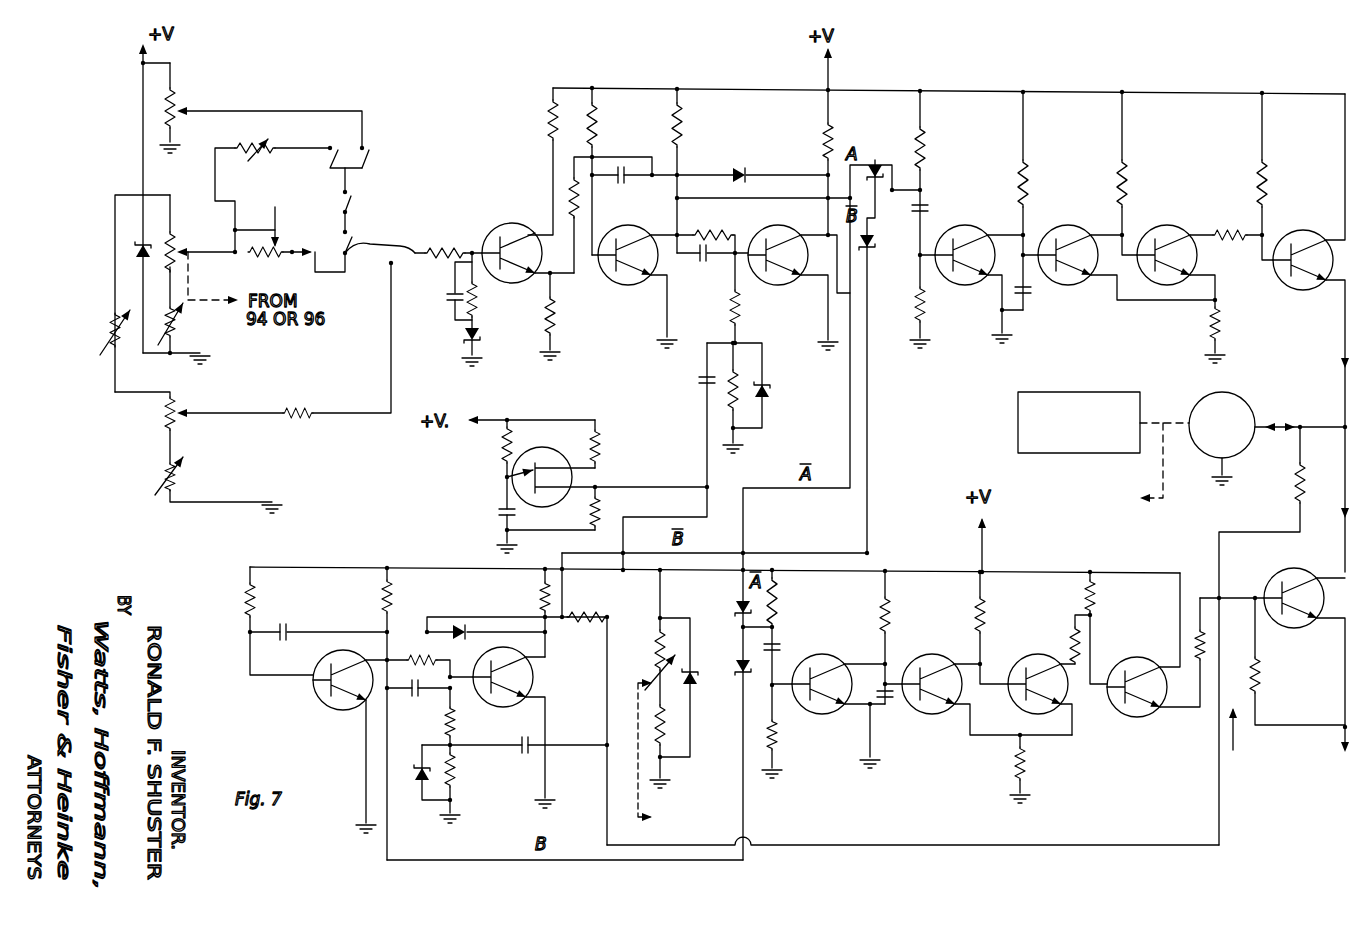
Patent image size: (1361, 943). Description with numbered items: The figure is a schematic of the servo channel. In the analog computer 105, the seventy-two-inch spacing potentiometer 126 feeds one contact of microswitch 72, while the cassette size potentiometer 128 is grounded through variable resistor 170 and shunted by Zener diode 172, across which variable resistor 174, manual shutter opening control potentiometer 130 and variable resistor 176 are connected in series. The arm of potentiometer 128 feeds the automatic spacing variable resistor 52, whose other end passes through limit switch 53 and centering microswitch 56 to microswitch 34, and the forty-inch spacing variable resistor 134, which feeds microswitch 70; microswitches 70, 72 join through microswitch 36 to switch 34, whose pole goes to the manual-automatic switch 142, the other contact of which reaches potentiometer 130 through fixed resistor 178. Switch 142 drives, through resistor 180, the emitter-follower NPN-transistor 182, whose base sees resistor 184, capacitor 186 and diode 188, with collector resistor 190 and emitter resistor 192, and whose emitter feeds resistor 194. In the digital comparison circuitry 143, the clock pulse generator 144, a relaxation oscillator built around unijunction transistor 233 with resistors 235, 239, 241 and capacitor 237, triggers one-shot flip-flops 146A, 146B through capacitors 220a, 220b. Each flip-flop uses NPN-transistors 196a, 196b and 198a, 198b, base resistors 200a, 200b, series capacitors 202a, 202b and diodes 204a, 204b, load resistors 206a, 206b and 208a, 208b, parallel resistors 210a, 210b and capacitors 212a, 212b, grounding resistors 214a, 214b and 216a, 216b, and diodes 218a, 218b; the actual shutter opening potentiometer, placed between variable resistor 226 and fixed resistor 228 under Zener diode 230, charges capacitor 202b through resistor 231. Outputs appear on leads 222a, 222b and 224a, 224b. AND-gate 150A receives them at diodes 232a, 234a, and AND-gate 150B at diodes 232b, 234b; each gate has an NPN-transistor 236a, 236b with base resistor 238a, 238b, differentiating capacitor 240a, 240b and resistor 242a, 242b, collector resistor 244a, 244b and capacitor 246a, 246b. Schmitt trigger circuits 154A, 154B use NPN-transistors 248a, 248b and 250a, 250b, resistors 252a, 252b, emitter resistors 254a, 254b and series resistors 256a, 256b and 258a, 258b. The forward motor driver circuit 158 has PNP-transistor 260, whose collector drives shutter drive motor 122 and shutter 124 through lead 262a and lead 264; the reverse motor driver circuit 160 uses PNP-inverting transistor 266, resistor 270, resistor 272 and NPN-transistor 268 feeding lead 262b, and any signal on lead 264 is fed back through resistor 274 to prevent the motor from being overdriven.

The microswitch 34 is at (366, 242).
The microswitch 36 is at (355, 195).
The automatic spacing variable resistor 52 is at (270, 262).
The limit switch 53 is at (303, 245).
The centering microswitch 56 is at (315, 260).
The microswitch 70 is at (330, 160).
The microswitch 72 is at (372, 157).
The analog computer 105 is at (306, 92).
The shutter drive motor 122 is at (1210, 394).
The shutter 124 is at (1062, 392).
The seventy-two-inch spacing potentiometer 126 is at (180, 100).
The cassette size potentiometer 128 is at (177, 237).
The manual shutter opening control potentiometer 130 is at (160, 415).
The forty-inch spacing variable resistor 134 is at (278, 145).
The manual-automatic switch 142 is at (412, 247).
The digital comparison circuitry 143 is at (878, 82).
The clock pulse generator 144 is at (490, 477).
The one-shot flip-flop 146A is at (704, 163).
The one-shot flip-flop 146B is at (380, 558).
The AND-gate 150A is at (967, 182).
The AND-gate 150B is at (842, 604).
The Schmitt trigger circuit 154A is at (1135, 222).
The Schmitt trigger circuit 154B is at (1002, 642).
The forward motor driver circuit 158 is at (1298, 222).
The reverse motor driver circuit 160 is at (1248, 742).
The variable resistor 170 is at (180, 334).
The Zener diode 172 is at (133, 248).
The variable resistor 174 is at (107, 323).
The variable resistor 176 is at (160, 470).
The fixed resistor 178 is at (292, 398).
The resistor 180 is at (469, 250).
The NPN-transistor 182 is at (506, 230).
The resistor 184 is at (478, 300).
The capacitor 186 is at (450, 302).
The diode 188 is at (462, 337).
The resistor 190 is at (545, 127).
The resistor 192 is at (557, 320).
The resistor 194 is at (570, 196).
The NPN-transistor 196a is at (620, 284).
The NPN-transistor 196b is at (320, 697).
The NPN-transistor 198a is at (785, 287).
The NPN-transistor 198b is at (535, 678).
The resistor 200a is at (595, 120).
The resistor 200b is at (260, 600).
The capacitor 202a is at (622, 181).
The capacitor 202b is at (288, 622).
The diode 204a is at (740, 170).
The diode 204b is at (458, 620).
The load resistor 206a is at (672, 130).
The load resistor 206b is at (390, 597).
The load resistor 208a is at (834, 140).
The load resistor 208b is at (540, 603).
The resistor 210a is at (690, 228).
The resistor 210b is at (430, 657).
The capacitor 212a is at (708, 258).
The capacitor 212b is at (419, 681).
The resistor 214a is at (732, 306).
The resistor 214b is at (446, 720).
The resistor 216a is at (738, 400).
The resistor 216b is at (458, 773).
The diode 218a is at (772, 390).
The diode 218b is at (418, 785).
The capacitor 220a is at (700, 385).
The capacitor 220b is at (525, 735).
The lead 222a is at (748, 198).
The lead 222b is at (385, 848).
The lead 224a is at (868, 375).
The lead 224b is at (867, 425).
The variable resistor 226 is at (650, 628).
The fixed resistor 228 is at (665, 720).
The Zener diode 230 is at (695, 680).
The resistor 231 is at (587, 610).
The diode 232a is at (876, 159).
The diode 232b is at (738, 608).
The P-type unijunction transistor 233 is at (565, 460).
The diode 234a is at (872, 245).
The diode 234b is at (725, 654).
The resistor 235 is at (500, 438).
The NPN-transistor 236a is at (961, 228).
The NPN-transistor 236b is at (827, 650).
The capacitor 237 is at (500, 517).
The resistor 238a is at (926, 311).
The resistor 238b is at (788, 732).
The resistor 239 is at (603, 443).
The capacitor 240a is at (928, 208).
The capacitor 240b is at (780, 645).
The resistor 241 is at (603, 509).
The resistor 242a is at (930, 143).
The resistor 242b is at (778, 602).
The resistor 244a is at (1026, 170).
The resistor 244b is at (890, 610).
The capacitor 246a is at (1030, 298).
The capacitor 246b is at (895, 705).
The NPN-transistor 248a is at (1050, 229).
The NPN-transistor 248b is at (952, 652).
The NPN-transistor 250a is at (1163, 225).
The NPN-transistor 250b is at (1065, 655).
The resistor 252a is at (1118, 175).
The resistor 252b is at (970, 608).
The resistor 254a is at (1222, 323).
The resistor 254b is at (1026, 762).
The fixed resistor 256a is at (1230, 239).
The fixed resistor 256b is at (1083, 628).
The fixed resistor 258a is at (1263, 175).
The fixed resistor 258b is at (1096, 588).
The PNP-transistor 260 is at (1282, 288).
The lead 262a is at (1339, 368).
The lead 262b is at (1330, 545).
The lead 264 is at (1305, 424).
The PNP-inverting transistor 266 is at (1146, 720).
The NPN-transistor 268 is at (1286, 625).
The resistor 270 is at (1195, 645).
The resistor 272 is at (1263, 683).
The resistor 274 is at (1270, 490).